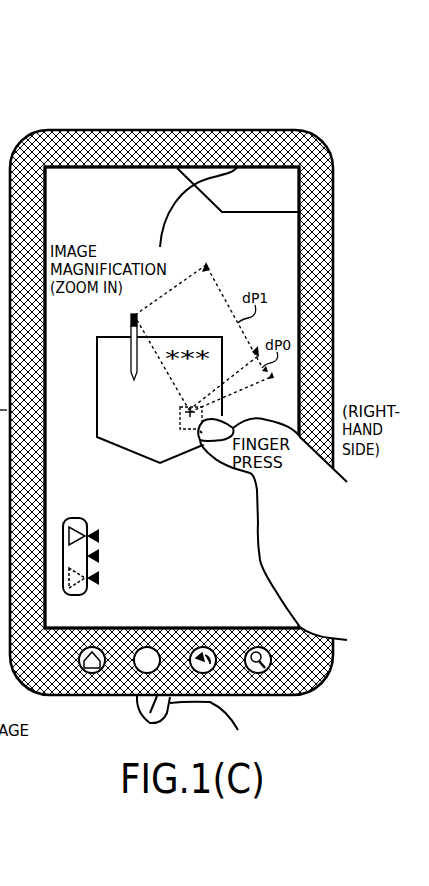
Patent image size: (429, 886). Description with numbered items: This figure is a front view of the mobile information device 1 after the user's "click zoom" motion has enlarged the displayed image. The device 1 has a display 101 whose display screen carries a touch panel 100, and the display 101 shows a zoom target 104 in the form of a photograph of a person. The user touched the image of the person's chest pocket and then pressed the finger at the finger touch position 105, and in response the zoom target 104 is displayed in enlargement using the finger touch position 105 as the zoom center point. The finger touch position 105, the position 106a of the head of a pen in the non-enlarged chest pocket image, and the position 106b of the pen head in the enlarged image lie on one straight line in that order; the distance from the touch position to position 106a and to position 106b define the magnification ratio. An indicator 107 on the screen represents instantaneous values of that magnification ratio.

The mobile information device 1 is at (313, 129).
The touch panel 100 is at (55, 187).
The display 101 is at (129, 187).
The zoom target 104 is at (248, 153).
The finger touch position 105 is at (200, 431).
The position of the head of the pen in the non-enlarged image 106a is at (180, 408).
The position of the head of the pen in the enlarged image 106b is at (130, 314).
The indicator 107 is at (87, 593).